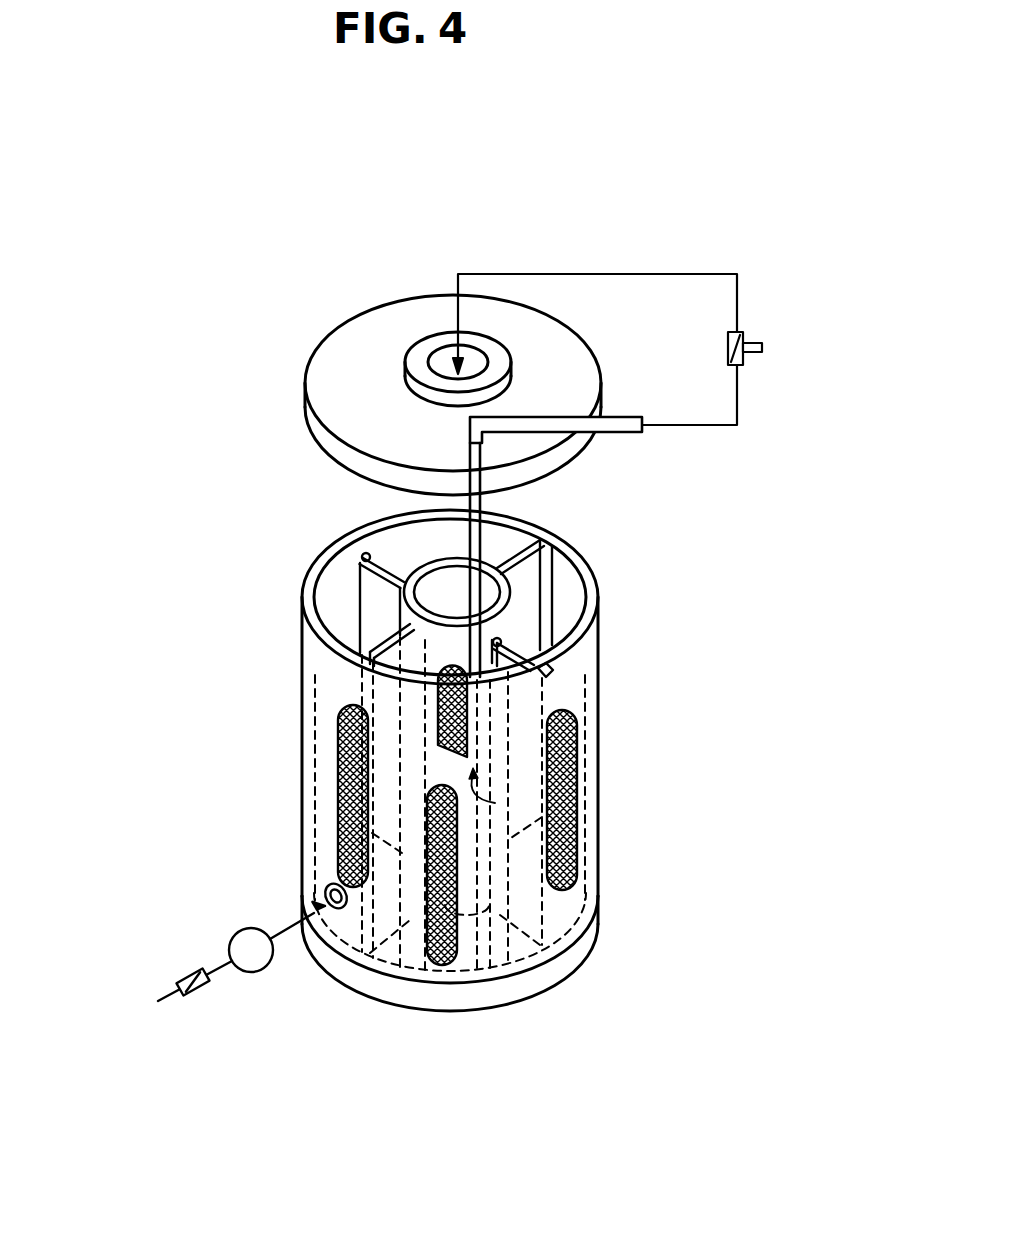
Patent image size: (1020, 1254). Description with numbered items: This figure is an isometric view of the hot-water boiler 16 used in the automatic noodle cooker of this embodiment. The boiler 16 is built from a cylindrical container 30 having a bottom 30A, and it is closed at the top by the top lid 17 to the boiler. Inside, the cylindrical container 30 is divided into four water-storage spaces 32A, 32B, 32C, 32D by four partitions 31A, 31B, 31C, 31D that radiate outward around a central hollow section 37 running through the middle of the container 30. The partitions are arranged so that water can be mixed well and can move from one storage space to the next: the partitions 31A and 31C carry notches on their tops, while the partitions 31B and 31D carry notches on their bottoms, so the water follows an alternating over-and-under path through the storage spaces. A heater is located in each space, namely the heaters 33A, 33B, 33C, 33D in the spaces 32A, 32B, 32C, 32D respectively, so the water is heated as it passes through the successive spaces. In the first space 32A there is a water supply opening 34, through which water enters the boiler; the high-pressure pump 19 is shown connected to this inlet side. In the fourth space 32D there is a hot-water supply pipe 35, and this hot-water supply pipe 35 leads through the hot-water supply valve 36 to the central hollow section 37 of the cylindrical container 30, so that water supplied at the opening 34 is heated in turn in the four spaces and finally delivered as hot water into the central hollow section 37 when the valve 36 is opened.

The hot-water boiler 16 is at (216, 386).
The top lid to the boiler 17 is at (383, 330).
The high-pressure pump 19 is at (252, 972).
The cylindrical container 30 is at (600, 853).
The bottom 30A is at (533, 972).
The partition 31A is at (370, 560).
The partition 31B is at (527, 533).
The partition 31C is at (560, 646).
The partition 31D is at (375, 635).
The water-storage space 32A is at (370, 602).
The water-storage space 32B is at (443, 532).
The water-storage space 32C is at (573, 593).
The water-storage space 32D is at (390, 676).
The heater 33A is at (340, 790).
The heater 33B is at (480, 710).
The heater 33C is at (565, 790).
The heater 33D is at (432, 968).
The water supply opening 34 is at (327, 892).
The hot-water supply pipe 35 is at (625, 432).
The hot-water supply valve 36 is at (745, 330).
The central hollow section 37 is at (443, 580).